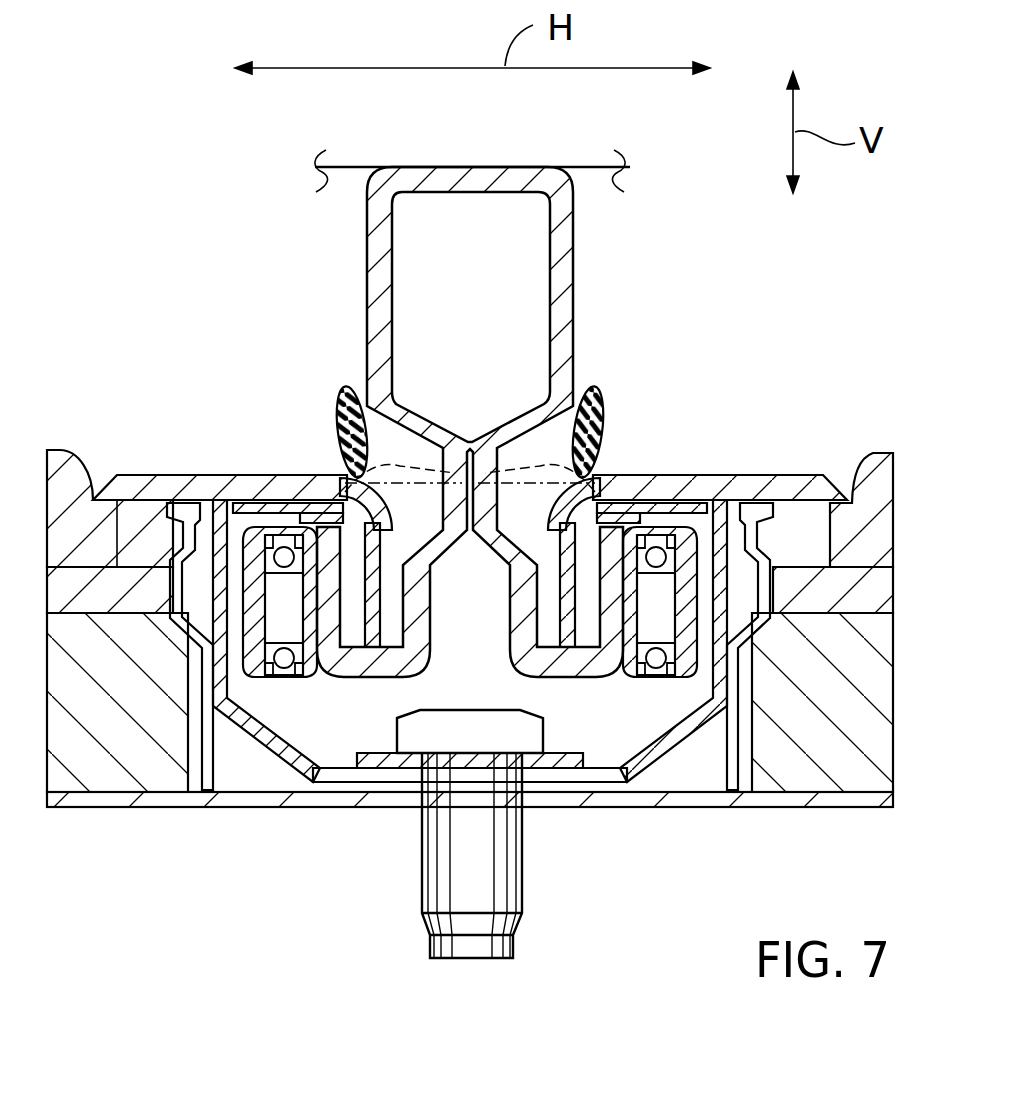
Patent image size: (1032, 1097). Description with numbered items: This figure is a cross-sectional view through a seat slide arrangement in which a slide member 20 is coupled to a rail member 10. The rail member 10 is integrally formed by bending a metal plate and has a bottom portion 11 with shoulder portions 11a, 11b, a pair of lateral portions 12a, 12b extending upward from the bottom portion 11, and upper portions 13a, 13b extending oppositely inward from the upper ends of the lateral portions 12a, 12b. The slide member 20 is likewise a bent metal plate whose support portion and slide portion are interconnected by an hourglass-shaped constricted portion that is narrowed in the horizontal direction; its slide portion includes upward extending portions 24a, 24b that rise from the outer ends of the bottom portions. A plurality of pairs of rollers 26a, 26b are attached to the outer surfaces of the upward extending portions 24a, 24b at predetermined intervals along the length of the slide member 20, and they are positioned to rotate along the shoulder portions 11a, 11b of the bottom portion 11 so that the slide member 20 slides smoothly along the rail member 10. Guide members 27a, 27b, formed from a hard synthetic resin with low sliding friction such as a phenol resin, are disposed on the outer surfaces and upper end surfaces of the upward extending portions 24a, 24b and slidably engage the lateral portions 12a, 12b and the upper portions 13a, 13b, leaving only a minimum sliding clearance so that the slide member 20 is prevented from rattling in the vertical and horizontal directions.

The rail member 10 is at (297, 697).
The bottom portion 11 is at (370, 784).
The shoulder portion 11a is at (262, 700).
The shoulder portion 11b is at (660, 700).
The lateral portion 12a is at (208, 707).
The lateral portion 12b is at (730, 705).
The upper portion 13a is at (284, 547).
The upper portion 13b is at (656, 547).
The slide member 20 is at (367, 268).
The upward extending portion 24a is at (312, 513).
The upward extending portion 24b is at (627, 513).
The roller 26a is at (258, 510).
The roller 26b is at (684, 510).
The guide member 27a is at (213, 478).
The guide member 27b is at (725, 478).